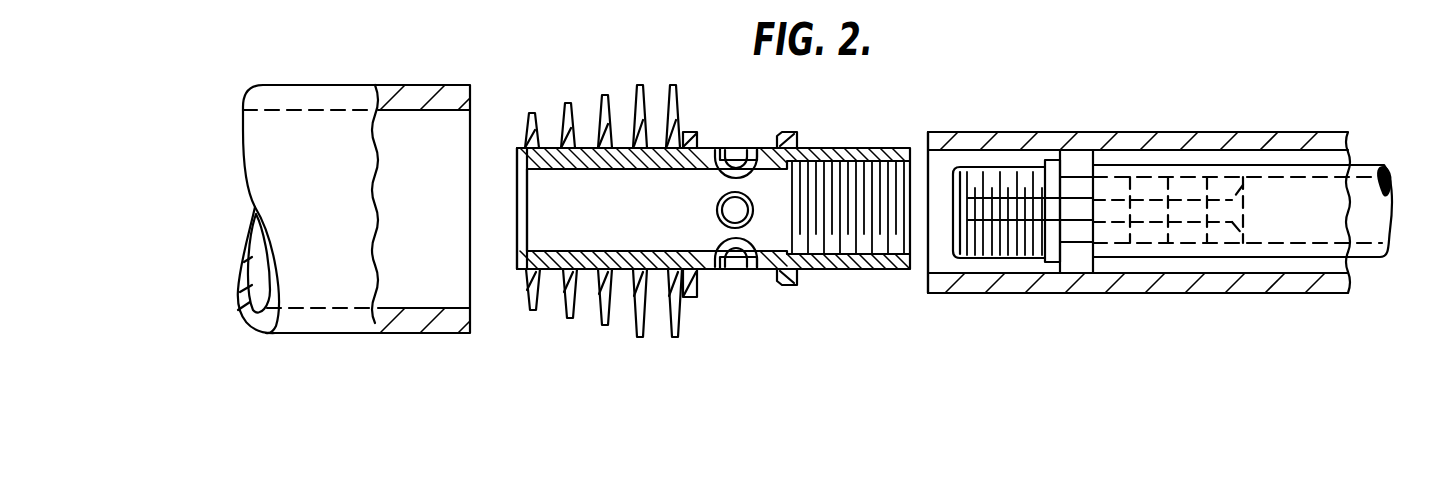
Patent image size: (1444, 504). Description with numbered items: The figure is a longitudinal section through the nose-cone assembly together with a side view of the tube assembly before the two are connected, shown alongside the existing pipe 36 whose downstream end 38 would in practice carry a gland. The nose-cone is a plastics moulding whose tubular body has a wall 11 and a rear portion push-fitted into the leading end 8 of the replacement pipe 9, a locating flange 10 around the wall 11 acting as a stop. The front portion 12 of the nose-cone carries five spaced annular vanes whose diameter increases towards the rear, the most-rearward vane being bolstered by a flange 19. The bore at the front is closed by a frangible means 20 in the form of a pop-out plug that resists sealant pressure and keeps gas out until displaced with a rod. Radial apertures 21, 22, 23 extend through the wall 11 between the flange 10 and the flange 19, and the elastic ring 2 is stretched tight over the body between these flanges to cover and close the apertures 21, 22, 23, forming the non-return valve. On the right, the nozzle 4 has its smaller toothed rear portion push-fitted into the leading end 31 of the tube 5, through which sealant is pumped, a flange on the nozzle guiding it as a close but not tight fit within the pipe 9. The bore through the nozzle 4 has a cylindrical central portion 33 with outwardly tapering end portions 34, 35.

The ring 2 is at (763, 287).
The nozzle 4 is at (1053, 250).
The tube 5 is at (1293, 167).
The leading end of replacement pipe 8 is at (937, 132).
The replacement pipe 9 is at (1130, 140).
The locating flange 10 is at (790, 132).
The wall of body 11 is at (716, 148).
The front portion 12 is at (620, 320).
The flange 19 is at (689, 298).
The frangible means 20 is at (517, 207).
The aperture 21 is at (740, 272).
The aperture 22 is at (717, 210).
The aperture 23 is at (740, 153).
The leading end of tube 31 is at (1225, 252).
The cylindrical central portion 33 is at (1072, 202).
The tapering end portion 34 is at (953, 217).
The tapering end portion 35 is at (1240, 210).
The existing pipe 36 is at (343, 333).
The downstream end of existing pipe 38 is at (430, 95).